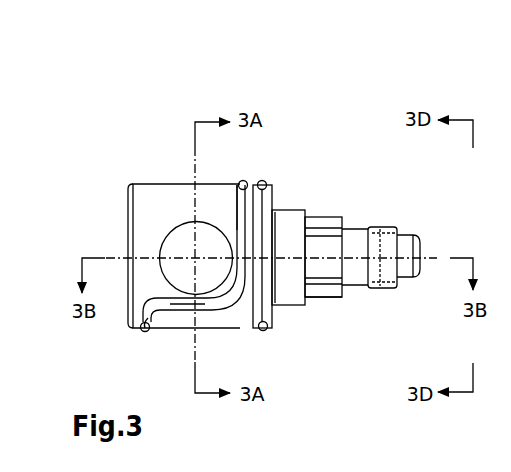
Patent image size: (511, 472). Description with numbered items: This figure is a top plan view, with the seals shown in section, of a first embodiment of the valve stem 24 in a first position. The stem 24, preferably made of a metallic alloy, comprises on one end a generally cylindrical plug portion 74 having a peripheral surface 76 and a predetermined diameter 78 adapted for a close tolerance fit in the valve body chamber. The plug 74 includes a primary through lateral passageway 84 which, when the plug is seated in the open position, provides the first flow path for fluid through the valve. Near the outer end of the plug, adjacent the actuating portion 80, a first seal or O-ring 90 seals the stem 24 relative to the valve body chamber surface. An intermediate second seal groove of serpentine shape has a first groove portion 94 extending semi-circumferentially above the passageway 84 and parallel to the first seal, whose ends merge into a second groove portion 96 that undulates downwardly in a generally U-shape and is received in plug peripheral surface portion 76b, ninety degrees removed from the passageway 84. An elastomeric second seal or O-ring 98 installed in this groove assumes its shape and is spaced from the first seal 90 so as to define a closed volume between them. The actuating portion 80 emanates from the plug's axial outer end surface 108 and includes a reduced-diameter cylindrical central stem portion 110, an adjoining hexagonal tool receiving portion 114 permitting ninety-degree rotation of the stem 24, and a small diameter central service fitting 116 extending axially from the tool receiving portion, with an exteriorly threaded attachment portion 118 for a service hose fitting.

The stem 24 is at (167, 133).
The plug portion 74 is at (148, 185).
The predetermined diameter 78 is at (130, 218).
The first lateral passageway 84 is at (175, 275).
The peripheral surface 76 is at (242, 332).
The plug peripheral surface portion 76b is at (158, 330).
The second seal first groove portion 94 is at (237, 208).
The second seal second groove portion 96 is at (212, 305).
The second seal 98 is at (247, 182).
The first seal 90 is at (266, 183).
The axial outer end surface 108 is at (280, 203).
The central stem portion 110 is at (287, 303).
The actuating portion 80 is at (326, 303).
The tool receiving portion 114 is at (337, 215).
The service fitting 116 is at (353, 287).
The exteriorly threaded attachment portion 118 is at (392, 230).